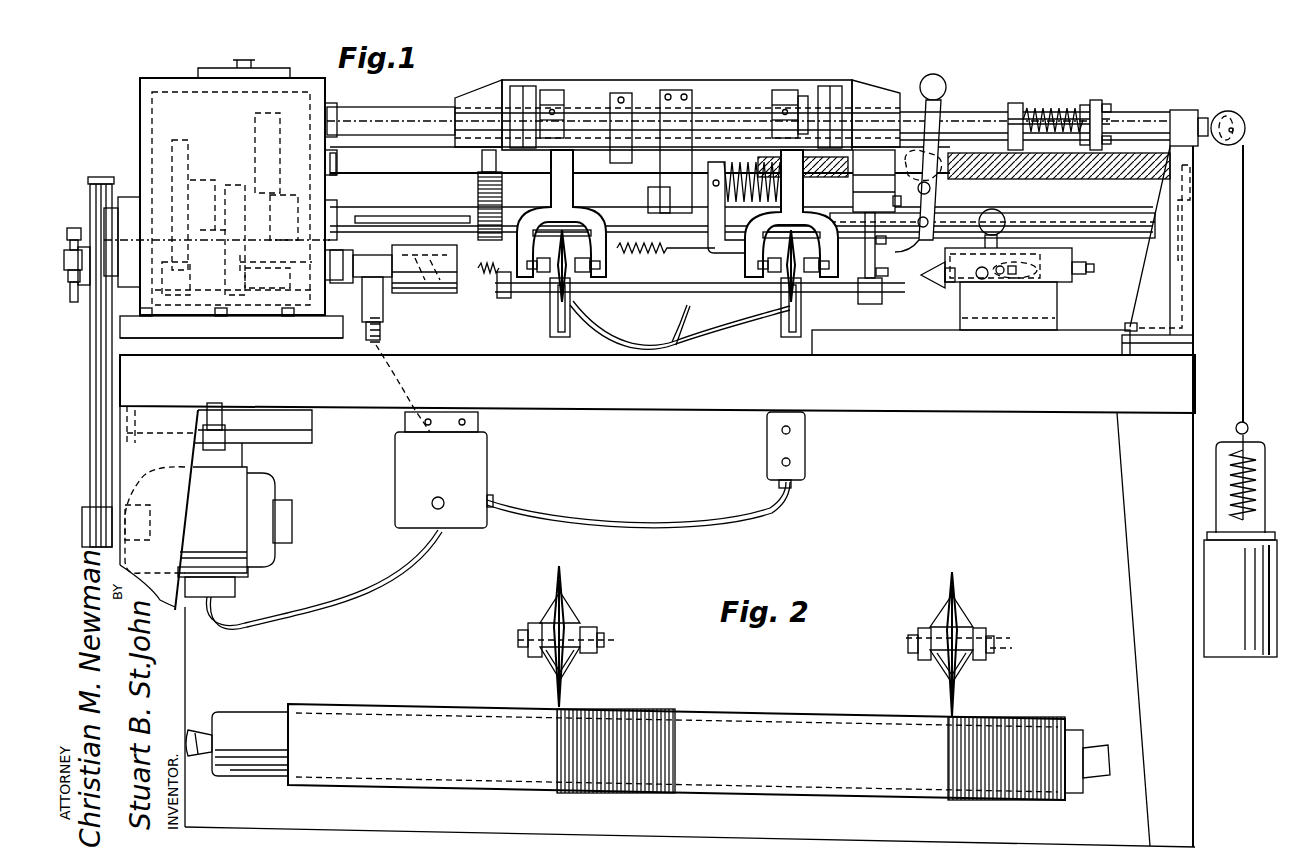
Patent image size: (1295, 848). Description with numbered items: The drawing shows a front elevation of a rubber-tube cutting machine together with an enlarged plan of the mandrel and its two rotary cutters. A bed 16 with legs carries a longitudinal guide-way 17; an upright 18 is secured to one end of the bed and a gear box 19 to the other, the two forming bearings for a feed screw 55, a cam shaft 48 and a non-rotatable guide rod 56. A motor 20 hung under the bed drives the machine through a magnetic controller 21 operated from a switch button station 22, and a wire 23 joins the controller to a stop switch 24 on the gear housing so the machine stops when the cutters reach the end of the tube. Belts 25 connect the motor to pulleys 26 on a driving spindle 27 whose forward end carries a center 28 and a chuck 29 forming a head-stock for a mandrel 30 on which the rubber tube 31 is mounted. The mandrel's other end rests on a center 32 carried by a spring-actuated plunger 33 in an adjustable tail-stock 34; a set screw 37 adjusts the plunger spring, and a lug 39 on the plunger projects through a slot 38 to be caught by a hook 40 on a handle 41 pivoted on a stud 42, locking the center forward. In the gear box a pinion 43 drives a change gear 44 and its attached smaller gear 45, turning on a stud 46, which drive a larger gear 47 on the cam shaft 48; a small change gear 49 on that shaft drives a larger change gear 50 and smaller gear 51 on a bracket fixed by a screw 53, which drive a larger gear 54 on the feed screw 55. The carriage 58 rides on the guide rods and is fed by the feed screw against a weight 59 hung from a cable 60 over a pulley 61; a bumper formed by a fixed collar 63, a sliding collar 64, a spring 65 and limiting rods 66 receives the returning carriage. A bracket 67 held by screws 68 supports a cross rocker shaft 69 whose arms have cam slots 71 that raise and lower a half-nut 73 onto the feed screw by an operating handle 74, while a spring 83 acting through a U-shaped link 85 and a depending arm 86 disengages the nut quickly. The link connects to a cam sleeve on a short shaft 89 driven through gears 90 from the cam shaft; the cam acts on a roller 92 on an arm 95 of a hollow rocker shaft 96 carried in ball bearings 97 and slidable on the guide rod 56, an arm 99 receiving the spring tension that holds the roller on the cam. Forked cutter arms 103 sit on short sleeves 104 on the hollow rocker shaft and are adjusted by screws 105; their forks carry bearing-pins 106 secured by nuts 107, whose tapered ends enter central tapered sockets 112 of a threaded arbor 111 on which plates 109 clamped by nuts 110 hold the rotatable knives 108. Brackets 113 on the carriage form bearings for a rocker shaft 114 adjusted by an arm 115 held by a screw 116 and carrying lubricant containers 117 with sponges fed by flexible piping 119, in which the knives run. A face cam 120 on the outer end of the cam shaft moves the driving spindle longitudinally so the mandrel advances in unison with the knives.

In FIG. 1, the machine bed 16 is at (657, 496).
In FIG. 1, the longitudinal guide-way 17 is at (870, 340).
In FIG. 1, the upright 18 is at (1186, 262).
In FIG. 1, the gear box 19 is at (231, 199).
In FIG. 1, the motor 20 is at (218, 500).
In FIG. 1, the magnetic controller 21 is at (498, 520).
In FIG. 1, the switch button station 22 is at (767, 450).
In FIG. 1, the wire 23 is at (380, 345).
In FIG. 1, the stop switch 24 is at (460, 272).
In FIG. 1, the belts 25 is at (92, 380).
In FIG. 1, the pulleys 26 is at (90, 287).
In FIG. 1, the driving spindle 27 is at (233, 292).
In FIG. 1, the center 28 is at (430, 295).
In FIG. 2, the center 28 is at (196, 730).
In FIG. 1, the chuck 29 is at (455, 285).
In FIG. 2, the mandrel 30 is at (264, 718).
In FIG. 2, the rubber tube 31 is at (435, 706).
In FIG. 1, the center 32 is at (932, 280).
In FIG. 2, the center 32 is at (1100, 745).
In FIG. 1, the spring-actuated plunger 33 is at (947, 290).
In FIG. 1, the tail-stock 34 is at (1057, 309).
In FIG. 1, the set screw 37 is at (1090, 262).
In FIG. 1, the slot 38 is at (1037, 262).
In FIG. 1, the lug 39 is at (1012, 280).
In FIG. 1, the hook 40 is at (976, 280).
In FIG. 1, the handle 41 is at (1006, 220).
In FIG. 1, the stud 42 is at (1000, 278).
In FIG. 1, the pinion 43 is at (178, 292).
In FIG. 1, the change gear 44 is at (190, 178).
In FIG. 1, the smaller gear 45 is at (128, 200).
In FIG. 1, the stud 46 is at (195, 200).
In FIG. 1, the larger gear 47 is at (138, 195).
In FIG. 1, the cam shaft 48 is at (412, 216).
In FIG. 1, the small change gear 49 is at (238, 225).
In FIG. 1, the larger change gear 50 is at (265, 285).
In FIG. 1, the smaller gear 51 is at (272, 263).
In FIG. 1, the screw 53 is at (282, 240).
In FIG. 1, the larger gear 54 is at (258, 128).
In FIG. 1, the feed screw 55 is at (640, 161).
In FIG. 1, the guide rod 56 is at (1145, 110).
In FIG. 1, the carriage 58 is at (853, 82).
In FIG. 1, the weight 59 is at (1240, 539).
In FIG. 1, the cable 60 is at (1245, 184).
In FIG. 1, the pulley 61 is at (1235, 113).
In FIG. 1, the collar 63 is at (1103, 112).
In FIG. 1, the collar 64 is at (1016, 103).
In FIG. 1, the spring 65 is at (1050, 105).
In FIG. 1, the rods 66 is at (1082, 105).
In FIG. 1, the bracket 67 is at (905, 158).
In FIG. 1, the screws 68 is at (874, 198).
In FIG. 1, the cross rocker shaft 69 is at (935, 192).
In FIG. 1, the cam slot 71 is at (874, 178).
In FIG. 1, the half-nut 73 is at (918, 150).
In FIG. 1, the operating handle 74 is at (936, 121).
In FIG. 1, the spring 83 is at (666, 256).
In FIG. 1, the U-shaped link 85 is at (722, 262).
In FIG. 1, the depending arm 86 is at (992, 229).
In FIG. 1, the short shaft 89 is at (588, 215).
In FIG. 1, the gears 90 is at (478, 200).
In FIG. 1, the roller 92 is at (655, 203).
In FIG. 1, the arm 95 is at (668, 172).
In FIG. 1, the hollow rocker shaft 96 is at (758, 121).
In FIG. 1, the ball bearings 97 is at (525, 90).
In FIG. 1, the arm 99 is at (626, 95).
In FIG. 1, the forked cutter arms 103 is at (600, 240).
In FIG. 1, the short sleeves 104 is at (575, 96).
In FIG. 1, the screws 105 is at (790, 92).
In FIG. 1, the bearing-pin 106 is at (600, 265).
In FIG. 1, the nuts 107 is at (556, 92).
In FIG. 1, the rotatable knives 108 is at (558, 272).
In FIG. 2, the rotatable knives 108 is at (563, 574).
In FIG. 2, the plates 109 is at (570, 616).
In FIG. 1, the nuts 110 is at (892, 205).
In FIG. 2, the nuts 110 is at (596, 628).
In FIG. 2, the threaded arbor 111 is at (604, 638).
In FIG. 2, the central tapered socket 112 is at (780, 642).
In FIG. 1, the bracket 113 is at (504, 299).
In FIG. 1, the rocker shaft 114 is at (74, 228).
In FIG. 1, the arm 115 is at (888, 272).
In FIG. 1, the screw 116 is at (886, 240).
In FIG. 1, the lubricant containers 117 is at (550, 324).
In FIG. 1, the flexible piping 119 is at (680, 326).
In FIG. 1, the face cam 120 is at (99, 177).